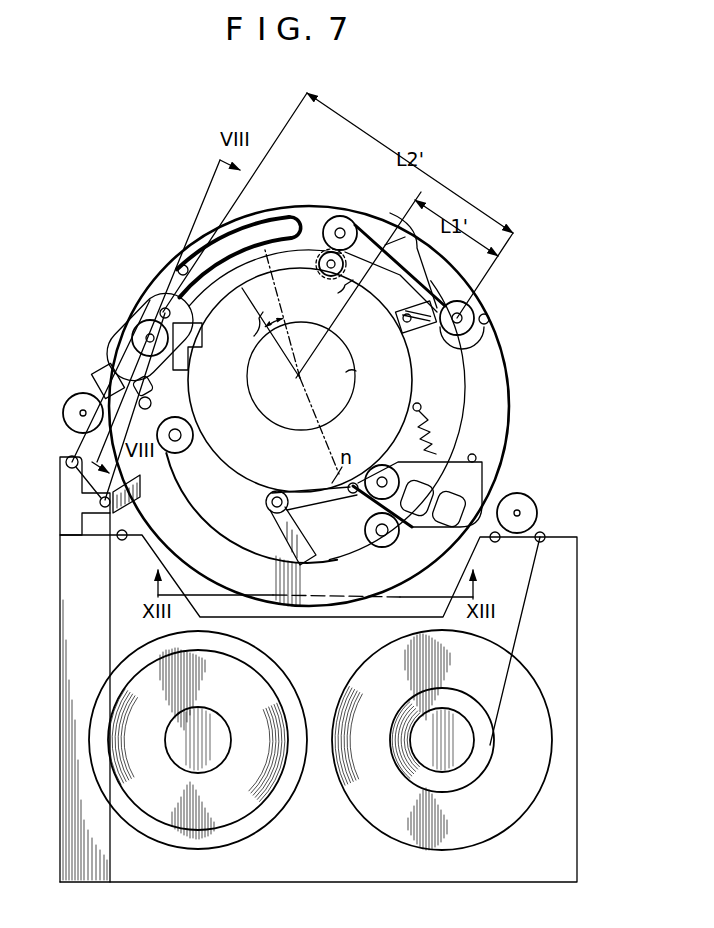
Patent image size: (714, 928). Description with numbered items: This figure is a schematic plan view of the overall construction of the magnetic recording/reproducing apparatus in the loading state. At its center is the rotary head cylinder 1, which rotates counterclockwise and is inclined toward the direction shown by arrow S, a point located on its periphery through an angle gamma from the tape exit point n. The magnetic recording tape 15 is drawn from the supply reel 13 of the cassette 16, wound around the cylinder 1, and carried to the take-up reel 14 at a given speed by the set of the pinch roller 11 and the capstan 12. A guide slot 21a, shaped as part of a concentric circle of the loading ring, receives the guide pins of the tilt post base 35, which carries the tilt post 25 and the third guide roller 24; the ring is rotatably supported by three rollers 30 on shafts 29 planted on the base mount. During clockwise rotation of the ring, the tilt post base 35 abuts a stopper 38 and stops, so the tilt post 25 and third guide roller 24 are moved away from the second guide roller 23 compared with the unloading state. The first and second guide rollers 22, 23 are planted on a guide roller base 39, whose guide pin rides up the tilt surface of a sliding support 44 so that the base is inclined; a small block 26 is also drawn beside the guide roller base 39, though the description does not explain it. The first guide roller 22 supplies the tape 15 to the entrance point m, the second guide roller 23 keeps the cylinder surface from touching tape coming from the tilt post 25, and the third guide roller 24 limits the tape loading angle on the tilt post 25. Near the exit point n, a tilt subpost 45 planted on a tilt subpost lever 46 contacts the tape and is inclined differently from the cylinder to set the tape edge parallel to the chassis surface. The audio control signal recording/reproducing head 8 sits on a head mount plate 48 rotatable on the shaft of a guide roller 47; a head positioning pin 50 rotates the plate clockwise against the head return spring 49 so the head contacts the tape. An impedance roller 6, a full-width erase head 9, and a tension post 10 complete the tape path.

The rotary head cylinder 1 is at (393, 430).
The impedance roller 6 is at (63, 406).
The audio control signal recording/reproducing head 8 is at (428, 486).
The full-width erase head 9 is at (100, 372).
The tension post 10 is at (65, 458).
The pinch roller 11 is at (533, 506).
The capstan 12 is at (495, 543).
The supply reel 13 is at (272, 822).
The take-up reel 14 is at (516, 824).
The magnetic recording tape 15 is at (535, 576).
The cassette 16 is at (577, 629).
The guide slot 21a is at (182, 264).
The first guide roller 22 is at (490, 319).
The second guide roller 23 is at (340, 216).
The third guide roller 24 is at (133, 336).
The tilt post 25 is at (171, 315).
The guide block 26 is at (413, 333).
The shaft 29 is at (330, 260).
The roller 30 is at (316, 268).
The tilt post base 35 is at (145, 308).
The stopper 38 is at (190, 357).
The guide roller base 39 is at (402, 240).
The sliding support 44 is at (466, 304).
The tilt subpost 45 is at (352, 494).
The tilt subpost lever 46 is at (283, 524).
The guide roller 47 is at (383, 465).
The head mount plate 48 is at (480, 488).
The head return spring 49 is at (432, 425).
The head positioning pin 50 is at (473, 454).